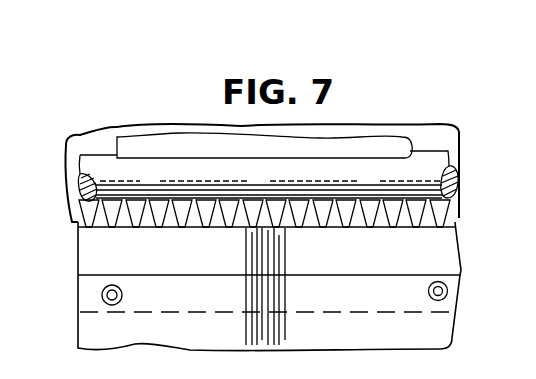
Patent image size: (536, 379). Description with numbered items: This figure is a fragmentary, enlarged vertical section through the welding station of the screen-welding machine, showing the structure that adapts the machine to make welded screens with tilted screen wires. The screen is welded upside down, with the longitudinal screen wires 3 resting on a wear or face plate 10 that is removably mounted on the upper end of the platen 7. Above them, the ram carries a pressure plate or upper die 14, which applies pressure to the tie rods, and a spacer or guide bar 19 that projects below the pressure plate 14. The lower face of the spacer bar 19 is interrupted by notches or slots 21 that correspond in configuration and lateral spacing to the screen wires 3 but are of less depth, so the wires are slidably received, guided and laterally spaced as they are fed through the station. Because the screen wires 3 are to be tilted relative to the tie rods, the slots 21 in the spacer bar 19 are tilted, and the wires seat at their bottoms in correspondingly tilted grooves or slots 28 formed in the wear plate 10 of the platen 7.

The longitudinal wires 3 is at (225, 228).
The platen 7 is at (78, 292).
The wear plate 10 is at (78, 256).
The pressure plate 14 is at (329, 141).
The spacer bar 19 is at (95, 137).
The slots 21 is at (183, 200).
The tilted slots 28 is at (160, 228).